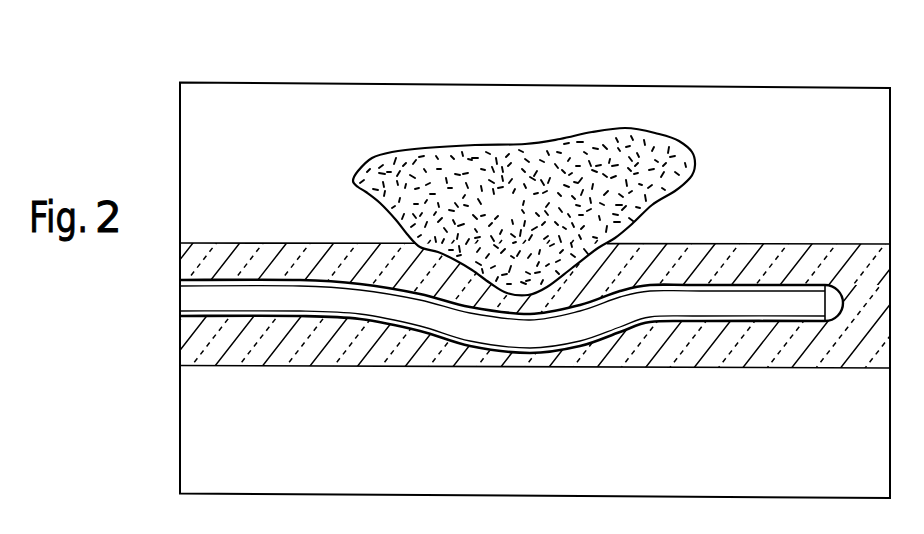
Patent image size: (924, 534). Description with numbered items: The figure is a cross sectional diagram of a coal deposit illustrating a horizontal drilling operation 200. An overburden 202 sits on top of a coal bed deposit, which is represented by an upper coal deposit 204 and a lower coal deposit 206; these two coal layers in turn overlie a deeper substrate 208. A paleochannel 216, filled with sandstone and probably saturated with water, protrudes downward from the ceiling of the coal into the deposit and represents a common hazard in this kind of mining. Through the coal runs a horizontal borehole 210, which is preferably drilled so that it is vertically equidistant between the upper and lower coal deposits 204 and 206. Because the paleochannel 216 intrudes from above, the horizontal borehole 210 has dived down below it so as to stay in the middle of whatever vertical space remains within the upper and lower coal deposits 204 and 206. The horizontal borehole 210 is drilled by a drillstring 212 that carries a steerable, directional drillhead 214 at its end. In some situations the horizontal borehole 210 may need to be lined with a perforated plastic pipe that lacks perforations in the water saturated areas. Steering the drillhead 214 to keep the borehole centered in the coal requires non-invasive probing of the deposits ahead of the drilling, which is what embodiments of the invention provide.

The horizontal drilling operation 200 is at (333, 62).
The overburden 202 is at (235, 165).
The upper coal deposit 204 is at (350, 267).
The lower coal deposit 206 is at (278, 354).
The deeper substrate 208 is at (421, 430).
The horizontal borehole 210 is at (738, 322).
The drillstring 212 is at (721, 313).
The drillhead 214 is at (835, 285).
The paleochannel 216 is at (483, 213).